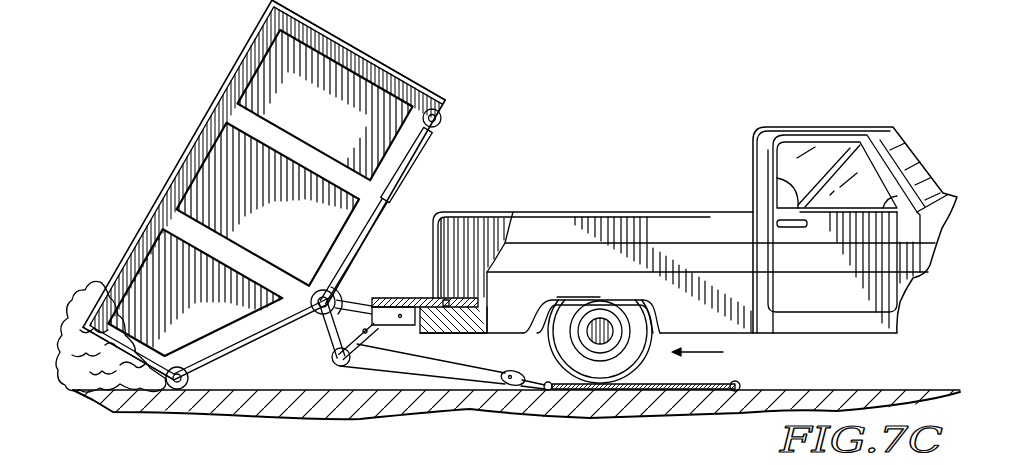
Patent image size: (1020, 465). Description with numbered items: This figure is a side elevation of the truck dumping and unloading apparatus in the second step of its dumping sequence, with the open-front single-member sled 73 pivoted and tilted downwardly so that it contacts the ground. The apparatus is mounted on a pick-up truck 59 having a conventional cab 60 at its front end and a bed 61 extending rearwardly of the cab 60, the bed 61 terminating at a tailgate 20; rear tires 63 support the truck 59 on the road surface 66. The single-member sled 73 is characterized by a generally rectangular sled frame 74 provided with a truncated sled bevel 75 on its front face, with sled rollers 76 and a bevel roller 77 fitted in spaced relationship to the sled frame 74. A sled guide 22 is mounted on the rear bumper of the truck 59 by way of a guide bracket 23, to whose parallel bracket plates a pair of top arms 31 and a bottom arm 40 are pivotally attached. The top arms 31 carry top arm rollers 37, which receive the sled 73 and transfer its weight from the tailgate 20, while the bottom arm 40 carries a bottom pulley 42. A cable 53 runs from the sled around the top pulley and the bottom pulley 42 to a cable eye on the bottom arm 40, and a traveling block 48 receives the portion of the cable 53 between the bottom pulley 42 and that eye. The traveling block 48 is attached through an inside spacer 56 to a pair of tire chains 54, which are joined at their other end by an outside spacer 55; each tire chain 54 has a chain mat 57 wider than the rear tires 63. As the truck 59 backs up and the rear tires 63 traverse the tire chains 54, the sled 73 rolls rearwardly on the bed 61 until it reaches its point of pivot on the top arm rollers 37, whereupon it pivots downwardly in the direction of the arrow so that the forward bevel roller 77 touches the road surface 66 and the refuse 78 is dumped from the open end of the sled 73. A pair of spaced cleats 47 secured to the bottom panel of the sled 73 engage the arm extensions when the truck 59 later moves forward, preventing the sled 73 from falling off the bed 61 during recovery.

The tailgate 20 is at (412, 273).
The sled guide 22 is at (313, 328).
The guide bracket 23 is at (411, 331).
The top arms 31 is at (357, 318).
The top arm rollers 37 is at (347, 287).
The bottom arm 40 is at (389, 339).
The bottom pulley 42 is at (324, 346).
The cleats 47 is at (388, 205).
The traveling block 48 is at (518, 395).
The cable 53 is at (350, 366).
The tire chains 54 is at (709, 396).
The outside spacer 55 is at (735, 382).
The inside spacer 56 is at (546, 383).
The chain mat 57 is at (650, 431).
The pick-up truck 59 is at (688, 238).
The cab 60 is at (795, 116).
The bed 61 is at (447, 297).
The rear tires 63 is at (628, 350).
The road surface 66 is at (837, 365).
The single-member sled 73 is at (423, 84).
The sled frame 74 is at (378, 58).
The sled bevel 75 is at (216, 357).
The sled rollers 76 is at (444, 118).
The bevel roller 77 is at (177, 392).
The refuse 78 is at (72, 288).